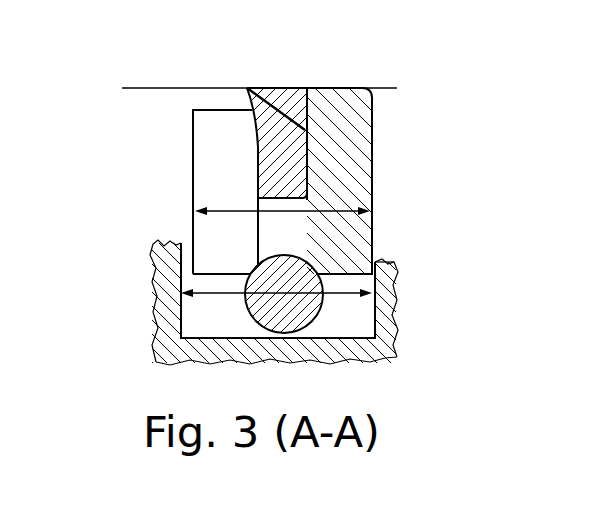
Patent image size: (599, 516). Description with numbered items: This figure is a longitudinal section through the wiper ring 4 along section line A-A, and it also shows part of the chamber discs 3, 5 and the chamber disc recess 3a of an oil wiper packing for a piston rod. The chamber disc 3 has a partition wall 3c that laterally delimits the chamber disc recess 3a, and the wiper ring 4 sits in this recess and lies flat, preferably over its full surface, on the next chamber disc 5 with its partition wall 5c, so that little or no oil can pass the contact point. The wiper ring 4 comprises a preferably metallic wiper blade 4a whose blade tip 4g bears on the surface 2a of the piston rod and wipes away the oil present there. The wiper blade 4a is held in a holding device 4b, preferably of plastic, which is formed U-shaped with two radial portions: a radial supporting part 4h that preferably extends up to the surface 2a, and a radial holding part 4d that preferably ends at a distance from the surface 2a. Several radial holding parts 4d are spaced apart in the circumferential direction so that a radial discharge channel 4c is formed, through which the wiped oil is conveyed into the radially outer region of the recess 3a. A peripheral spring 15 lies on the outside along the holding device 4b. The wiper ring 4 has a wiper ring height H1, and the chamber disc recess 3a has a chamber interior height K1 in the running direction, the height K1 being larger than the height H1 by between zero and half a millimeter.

The surface of the piston rod 2a is at (127, 92).
The chamber disc 3 is at (158, 343).
The chamber disc recess 3a is at (215, 325).
The partition wall 3c is at (153, 272).
The wiper ring 4 is at (340, 147).
The wiper blade 4a is at (290, 158).
The holding device 4b is at (360, 232).
The radial discharge channel 4c is at (156, 192).
The radial holding part 4d is at (213, 171).
The blade tip 4g is at (247, 88).
The radial supporting part 4h is at (345, 92).
The chamber disc 5 is at (382, 343).
The partition wall 5c is at (380, 262).
The peripheral spring 15 is at (302, 303).
The wiper ring height H1 is at (212, 212).
The chamber interior height K1 is at (222, 306).